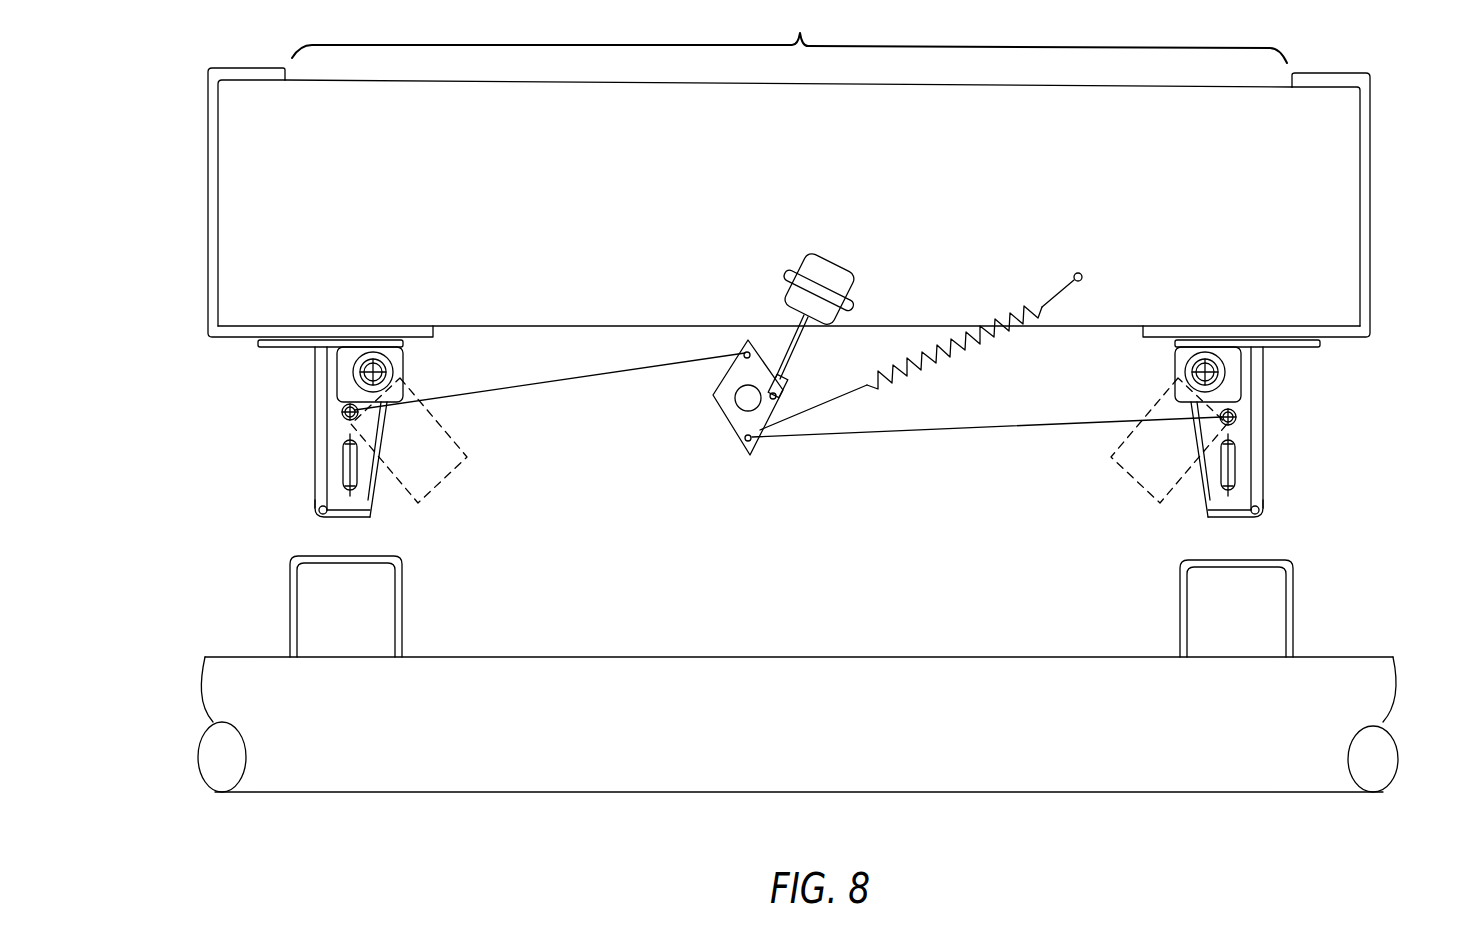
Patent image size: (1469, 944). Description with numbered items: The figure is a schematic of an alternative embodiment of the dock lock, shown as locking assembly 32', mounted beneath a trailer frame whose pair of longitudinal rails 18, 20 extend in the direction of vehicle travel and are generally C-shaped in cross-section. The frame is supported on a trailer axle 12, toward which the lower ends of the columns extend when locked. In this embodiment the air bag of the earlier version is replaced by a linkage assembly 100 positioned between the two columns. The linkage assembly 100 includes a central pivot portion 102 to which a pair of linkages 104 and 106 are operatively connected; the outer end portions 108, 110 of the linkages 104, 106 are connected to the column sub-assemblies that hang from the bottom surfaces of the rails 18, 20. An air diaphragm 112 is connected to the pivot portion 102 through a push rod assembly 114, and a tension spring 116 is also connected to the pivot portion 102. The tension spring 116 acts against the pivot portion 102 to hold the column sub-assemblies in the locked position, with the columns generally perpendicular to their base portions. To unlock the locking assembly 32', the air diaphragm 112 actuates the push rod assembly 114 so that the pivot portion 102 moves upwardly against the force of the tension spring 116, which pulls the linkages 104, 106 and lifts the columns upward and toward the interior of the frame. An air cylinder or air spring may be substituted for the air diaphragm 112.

The locking assembly 32' is at (789, 163).
The longitudinal rail 18 is at (207, 170).
The longitudinal rail 20 is at (1371, 177).
The end portion 108 is at (343, 410).
The end portion 110 is at (1237, 412).
The trailer axle 12 is at (955, 735).
The linkage 104 is at (537, 388).
The linkage 106 is at (970, 430).
The linkage assembly 100 is at (758, 429).
The pivot portion 102 is at (737, 418).
The push rod assembly 114 is at (797, 340).
The air diaphragm 112 is at (838, 285).
The tension spring 116 is at (1005, 300).